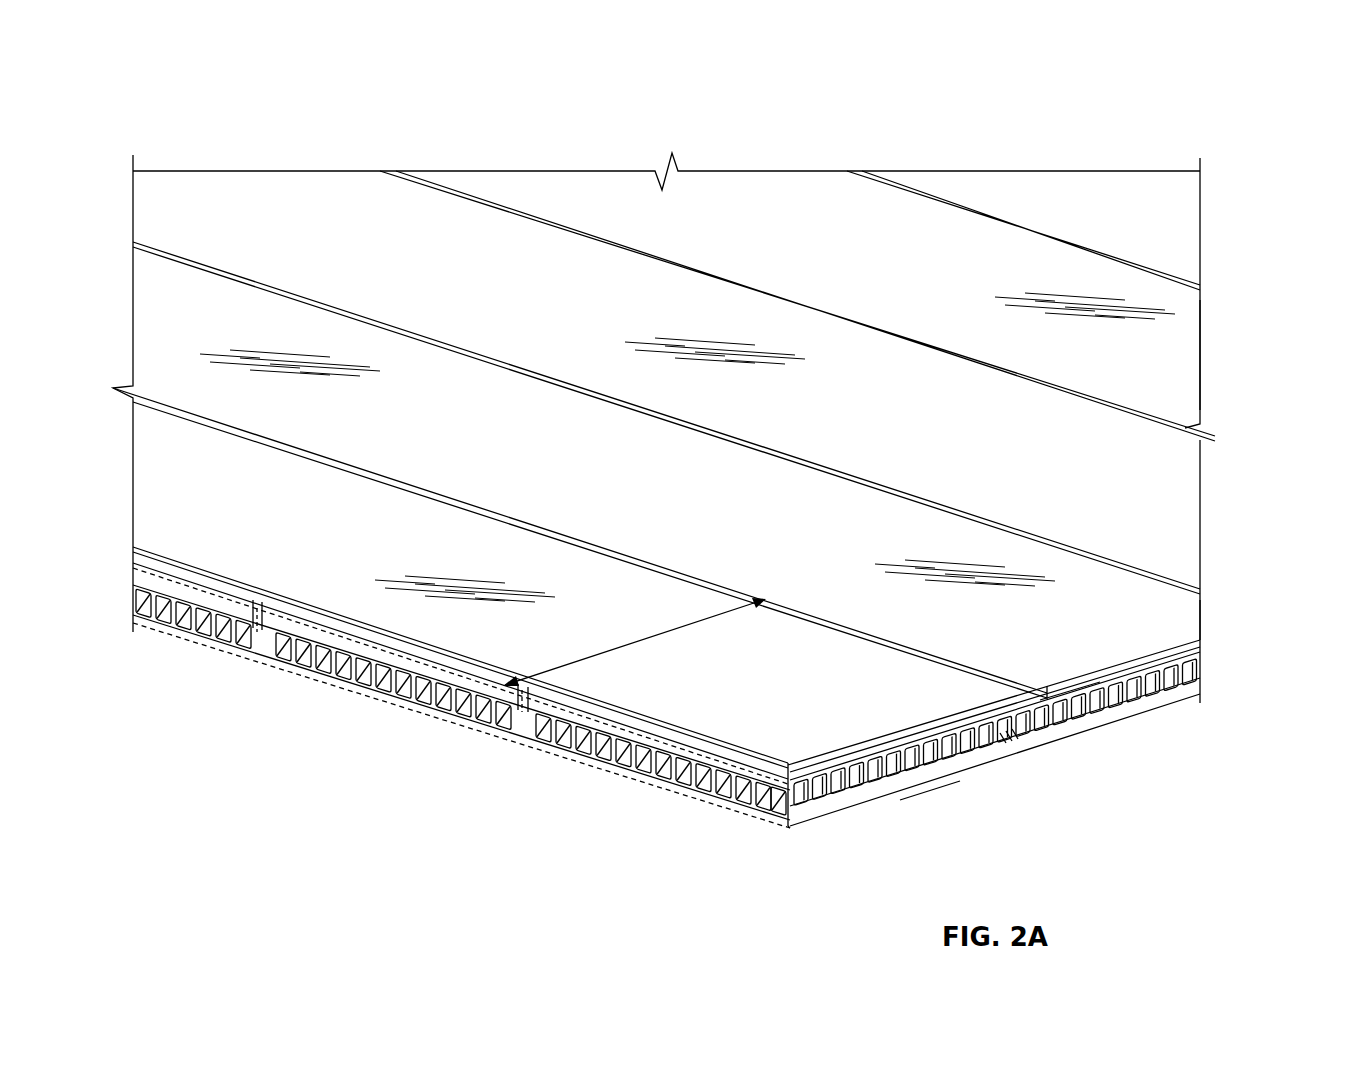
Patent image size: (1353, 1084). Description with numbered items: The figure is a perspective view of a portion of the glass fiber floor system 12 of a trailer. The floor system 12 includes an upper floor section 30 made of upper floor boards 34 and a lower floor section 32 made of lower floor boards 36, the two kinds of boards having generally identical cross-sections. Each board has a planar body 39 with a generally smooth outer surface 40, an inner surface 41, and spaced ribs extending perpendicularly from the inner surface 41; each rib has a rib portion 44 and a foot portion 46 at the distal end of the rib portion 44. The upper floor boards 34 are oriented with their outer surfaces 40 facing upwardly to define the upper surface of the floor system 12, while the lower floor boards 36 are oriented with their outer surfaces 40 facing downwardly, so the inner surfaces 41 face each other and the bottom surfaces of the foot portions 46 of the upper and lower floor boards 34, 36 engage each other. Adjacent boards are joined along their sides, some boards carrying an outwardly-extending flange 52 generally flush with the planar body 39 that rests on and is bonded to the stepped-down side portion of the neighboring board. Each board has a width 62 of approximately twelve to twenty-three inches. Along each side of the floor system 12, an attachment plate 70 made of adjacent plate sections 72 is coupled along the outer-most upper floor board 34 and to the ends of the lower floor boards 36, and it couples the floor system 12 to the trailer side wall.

The floor system 12 is at (290, 126).
The upper floor section 30 is at (1182, 655).
The lower floor section 32 is at (428, 712).
The upper floor board 34 is at (1152, 305).
The lower floor board 36 is at (182, 650).
The planar body 39 is at (1175, 512).
The outer surface 40 is at (1041, 356).
The inner surface 41 is at (570, 752).
The rib portion 44 is at (1000, 718).
The foot portion 46 is at (913, 763).
The outwardly-extending flange 52 is at (1068, 712).
The width 62 is at (615, 650).
The attachment plate 70 is at (710, 816).
The plate section 72 is at (148, 630).